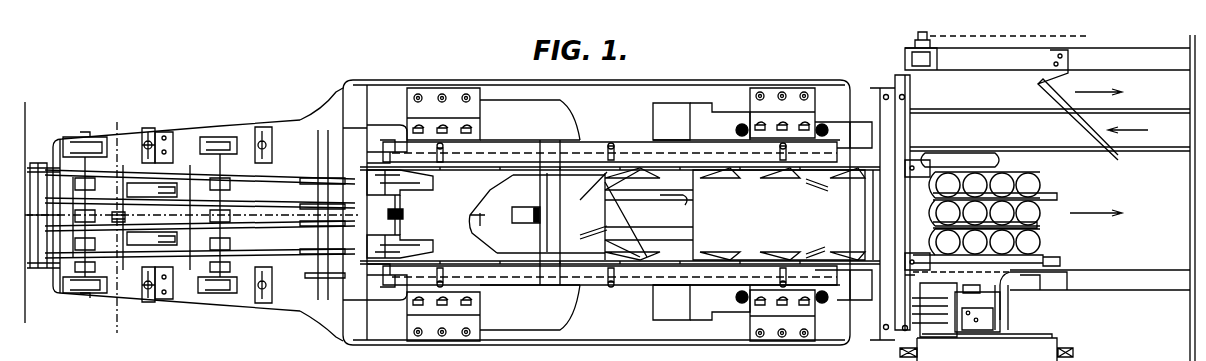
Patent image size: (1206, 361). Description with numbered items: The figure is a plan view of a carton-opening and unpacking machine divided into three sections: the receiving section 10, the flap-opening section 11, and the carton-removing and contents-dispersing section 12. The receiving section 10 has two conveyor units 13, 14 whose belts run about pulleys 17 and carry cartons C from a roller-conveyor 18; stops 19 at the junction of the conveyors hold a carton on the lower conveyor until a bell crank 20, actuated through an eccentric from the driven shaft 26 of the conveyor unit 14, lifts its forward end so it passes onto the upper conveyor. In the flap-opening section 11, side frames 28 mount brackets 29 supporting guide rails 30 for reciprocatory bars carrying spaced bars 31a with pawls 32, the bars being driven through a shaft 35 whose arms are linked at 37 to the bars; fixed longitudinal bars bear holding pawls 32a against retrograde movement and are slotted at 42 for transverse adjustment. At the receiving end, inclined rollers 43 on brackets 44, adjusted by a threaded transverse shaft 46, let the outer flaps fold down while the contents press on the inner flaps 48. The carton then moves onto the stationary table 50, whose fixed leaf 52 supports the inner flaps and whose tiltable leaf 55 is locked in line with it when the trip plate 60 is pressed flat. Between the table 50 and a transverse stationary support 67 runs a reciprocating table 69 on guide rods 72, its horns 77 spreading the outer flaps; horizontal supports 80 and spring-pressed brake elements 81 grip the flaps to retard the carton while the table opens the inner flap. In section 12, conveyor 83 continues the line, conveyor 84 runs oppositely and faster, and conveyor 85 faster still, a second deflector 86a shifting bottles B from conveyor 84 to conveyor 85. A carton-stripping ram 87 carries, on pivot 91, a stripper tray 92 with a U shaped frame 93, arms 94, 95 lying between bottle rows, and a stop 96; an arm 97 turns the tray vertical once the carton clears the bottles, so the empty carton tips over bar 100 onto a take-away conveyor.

The receiving section 10 is at (263, 92).
The flap-opening section 11 is at (700, 73).
The carton-removing and contents-dispersing section 12 is at (1160, 305).
The conveyor unit 13 is at (123, 257).
The conveyor unit 14 is at (300, 128).
The pulleys 17 is at (240, 177).
The roller-conveyor 18 is at (36, 162).
The stops 19 is at (172, 165).
The bell crank 20 is at (137, 222).
The driven shaft 26 is at (323, 302).
The side frames 28 is at (498, 88).
The brackets 29 is at (426, 92).
The guide rails 30 is at (848, 140).
The bars 31a is at (380, 170).
The pawls 32 is at (510, 177).
The holding pawls 32a is at (588, 237).
The shaft 35 is at (402, 222).
The link connection 37 is at (496, 138).
The transverse slots 42 is at (440, 162).
The rollers 43 is at (413, 183).
The brackets 44 is at (369, 128).
The transverse shaft 46 is at (390, 216).
The inner flap 48 is at (413, 245).
The stationary table 50 is at (526, 239).
The fixed leaf 52 is at (480, 212).
The tiltable leaf 55 is at (595, 213).
The trip plate 60 is at (525, 208).
The transverse stationary support 67 is at (908, 100).
The reciprocating table 69 is at (790, 213).
The guide rods 72 is at (680, 205).
The horns 77 is at (630, 258).
The horizontal supports 80 is at (653, 121).
The spring-pressed brake elements 81 is at (698, 118).
The conveyor 83 is at (1168, 216).
The conveyor 84 is at (1176, 136).
The conveyor 85 is at (1168, 99).
The second deflector 86a is at (1072, 118).
The carton-stripping ram 87 is at (940, 333).
The pivot 91 is at (1010, 285).
The stripper tray 92 is at (967, 158).
The U shaped frame 93 is at (998, 160).
The arm 94 is at (1037, 225).
The arm 95 is at (1057, 195).
The stop 96 is at (1060, 262).
The arm 97 is at (1008, 318).
The bar 100 is at (1012, 335).
The bottles B is at (1038, 180).
The cartons C is at (192, 220).